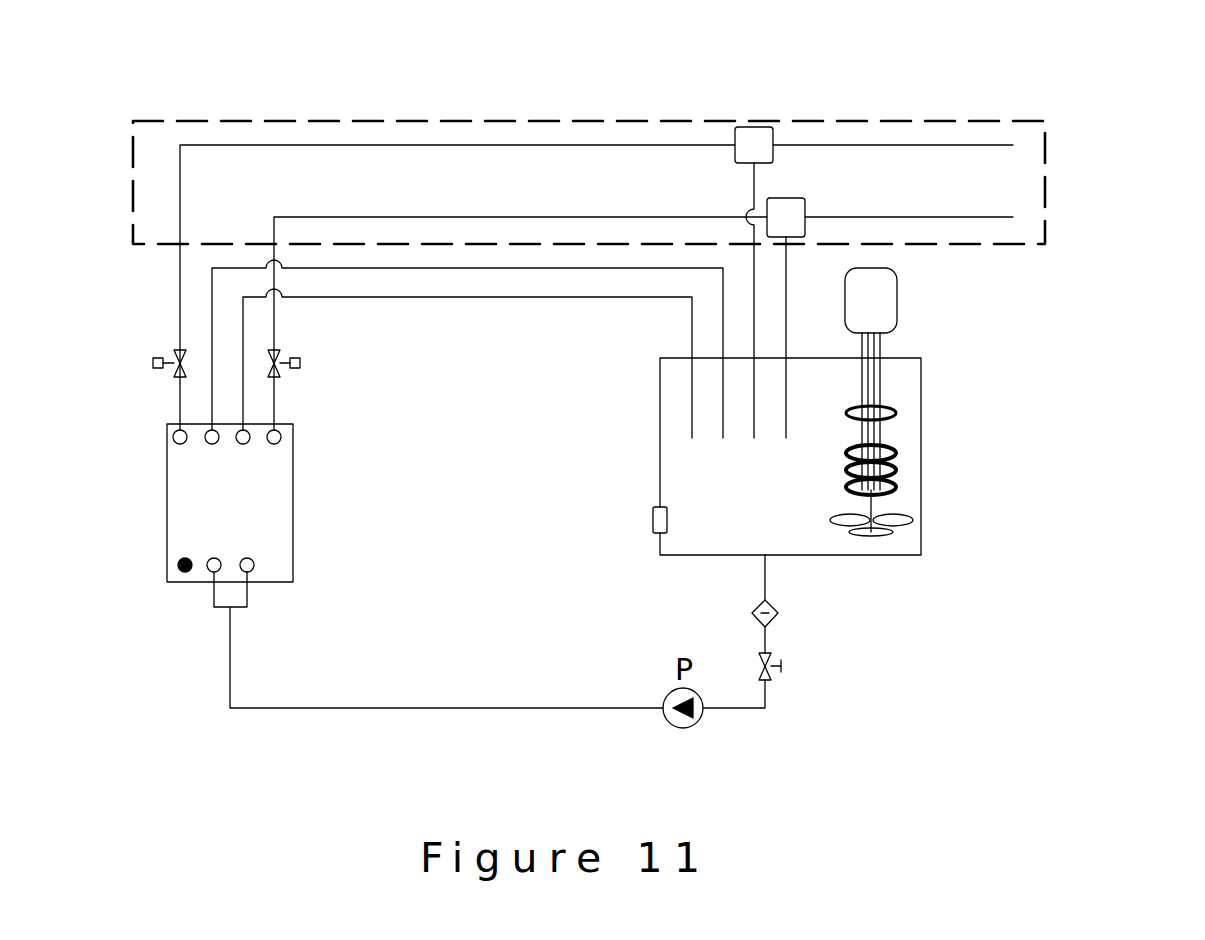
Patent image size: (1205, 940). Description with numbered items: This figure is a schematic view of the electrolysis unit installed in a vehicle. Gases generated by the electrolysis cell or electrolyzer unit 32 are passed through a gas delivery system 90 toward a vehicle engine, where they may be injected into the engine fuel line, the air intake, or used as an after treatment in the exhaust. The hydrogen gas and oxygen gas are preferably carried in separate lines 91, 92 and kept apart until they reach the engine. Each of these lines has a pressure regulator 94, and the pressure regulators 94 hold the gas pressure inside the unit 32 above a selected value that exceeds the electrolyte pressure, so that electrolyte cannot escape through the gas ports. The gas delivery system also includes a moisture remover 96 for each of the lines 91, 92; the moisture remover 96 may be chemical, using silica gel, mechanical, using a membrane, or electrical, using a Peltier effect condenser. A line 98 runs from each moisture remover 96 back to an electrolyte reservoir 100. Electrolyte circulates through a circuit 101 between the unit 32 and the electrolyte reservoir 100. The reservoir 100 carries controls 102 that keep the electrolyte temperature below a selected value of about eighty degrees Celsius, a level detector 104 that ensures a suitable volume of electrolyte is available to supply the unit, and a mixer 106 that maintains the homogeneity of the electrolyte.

The electrolysis cell or electrolyzer unit 32 is at (176, 488).
The gas delivery system 90 is at (1050, 200).
The hydrogen line 91 is at (178, 290).
The oxygen line 92 is at (276, 325).
The pressure regulator 94 is at (153, 364).
The moisture remover 96 is at (792, 198).
The line 98 is at (790, 255).
The electrolyte reservoir 100 is at (682, 446).
The circuit 101 is at (500, 268).
The controls 102 is at (653, 522).
The level detector 104 is at (900, 415).
The mixer 106 is at (900, 512).